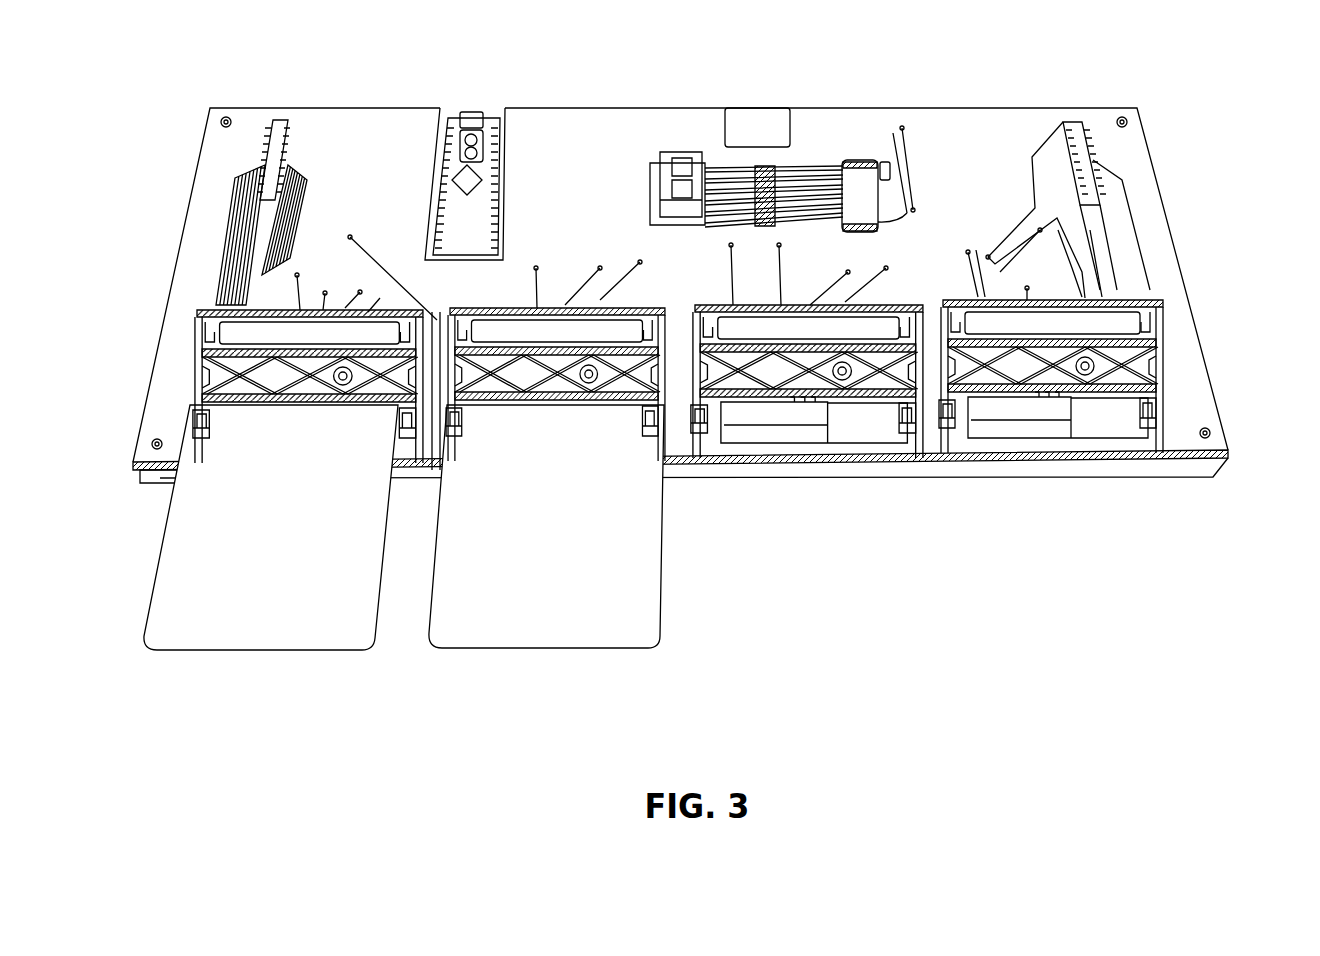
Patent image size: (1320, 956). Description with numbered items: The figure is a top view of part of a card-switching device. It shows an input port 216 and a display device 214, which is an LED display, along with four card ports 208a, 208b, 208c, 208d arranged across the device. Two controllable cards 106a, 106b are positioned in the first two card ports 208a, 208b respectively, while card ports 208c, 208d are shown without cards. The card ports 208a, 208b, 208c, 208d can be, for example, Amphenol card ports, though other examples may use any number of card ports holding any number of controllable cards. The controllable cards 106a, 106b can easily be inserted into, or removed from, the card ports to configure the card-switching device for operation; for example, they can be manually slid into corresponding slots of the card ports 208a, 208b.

The controllable card 106a is at (268, 630).
The controllable card 106b is at (555, 628).
The card port 208a is at (197, 352).
The card port 208b is at (637, 392).
The card port 208c is at (865, 428).
The card port 208d is at (1168, 370).
The display device 214 is at (683, 152).
The input port 216 is at (473, 112).